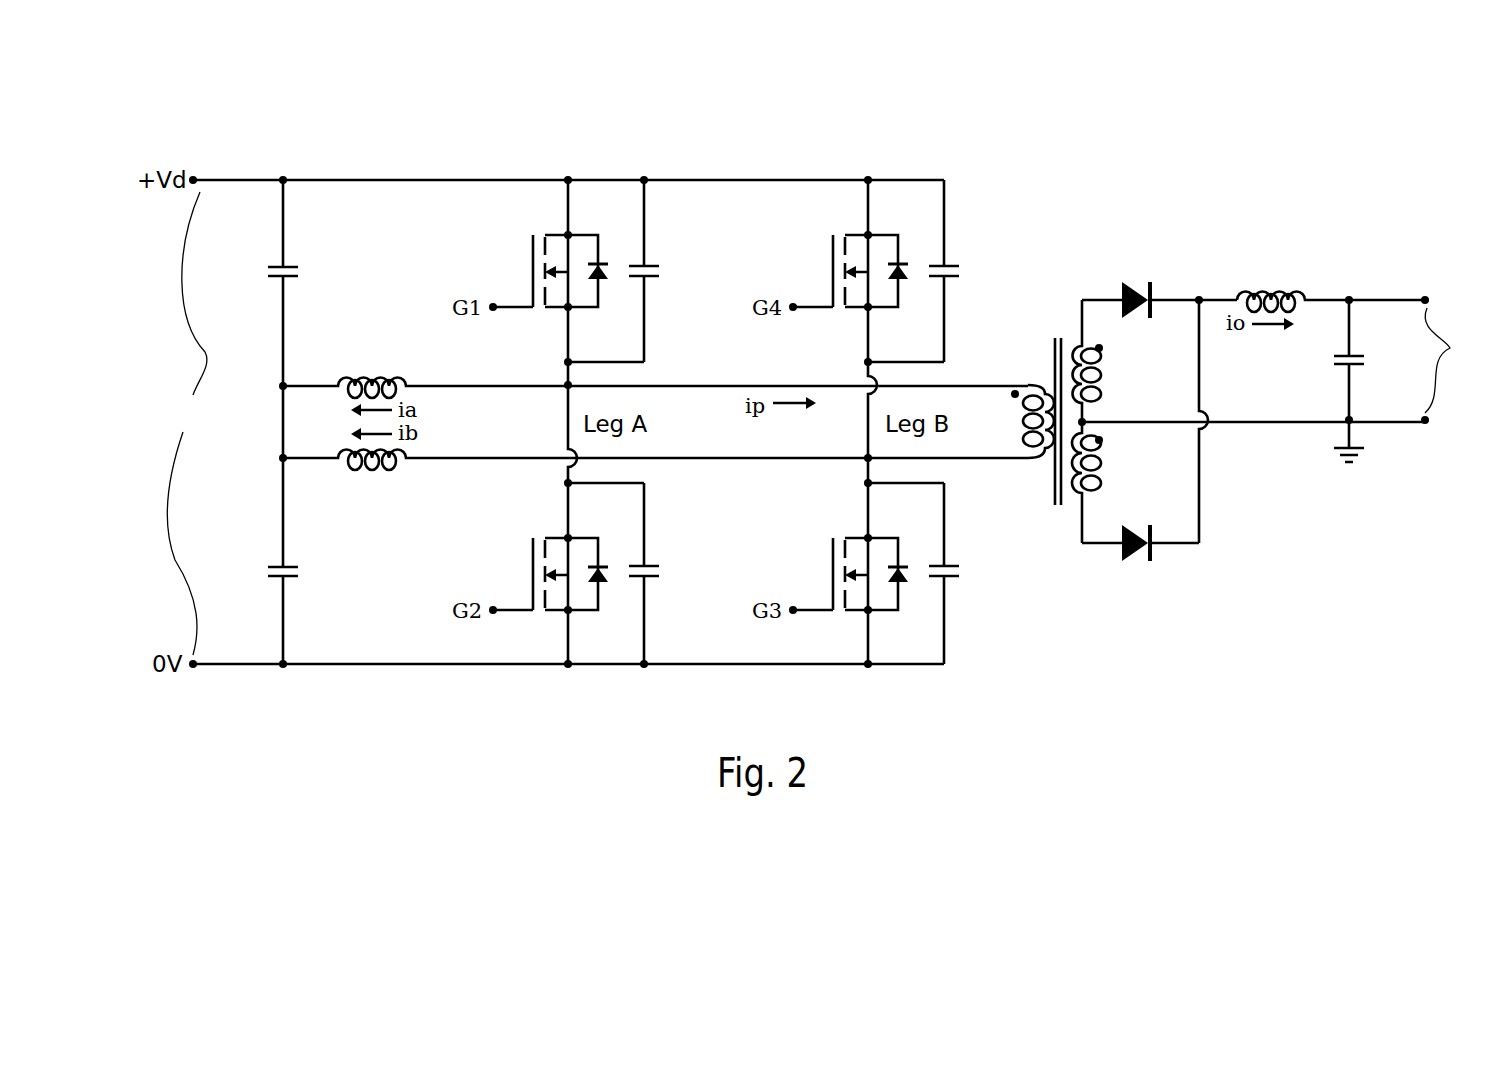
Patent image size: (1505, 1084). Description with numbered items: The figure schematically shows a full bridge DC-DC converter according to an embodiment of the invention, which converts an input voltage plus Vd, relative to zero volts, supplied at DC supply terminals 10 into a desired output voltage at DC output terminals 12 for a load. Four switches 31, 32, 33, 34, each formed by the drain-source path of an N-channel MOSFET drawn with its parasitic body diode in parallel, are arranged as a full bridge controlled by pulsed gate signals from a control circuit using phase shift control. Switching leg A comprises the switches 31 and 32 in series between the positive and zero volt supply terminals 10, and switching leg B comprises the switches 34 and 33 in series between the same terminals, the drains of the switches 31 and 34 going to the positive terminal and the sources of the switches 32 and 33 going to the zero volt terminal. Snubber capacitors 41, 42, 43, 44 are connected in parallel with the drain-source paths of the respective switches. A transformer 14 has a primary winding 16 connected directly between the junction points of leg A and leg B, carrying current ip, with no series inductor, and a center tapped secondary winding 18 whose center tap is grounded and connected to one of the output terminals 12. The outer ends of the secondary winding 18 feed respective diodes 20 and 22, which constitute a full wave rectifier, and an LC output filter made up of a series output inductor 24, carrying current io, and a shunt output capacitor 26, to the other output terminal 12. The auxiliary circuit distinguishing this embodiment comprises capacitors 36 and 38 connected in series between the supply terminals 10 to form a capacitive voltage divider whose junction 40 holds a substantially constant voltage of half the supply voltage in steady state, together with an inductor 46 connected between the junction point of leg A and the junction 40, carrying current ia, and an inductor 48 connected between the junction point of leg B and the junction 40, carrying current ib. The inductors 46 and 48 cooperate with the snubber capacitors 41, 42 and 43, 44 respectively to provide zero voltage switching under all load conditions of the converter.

The DC supply terminals 10 is at (186, 423).
The DC output terminals 12 is at (1453, 360).
The transformer 14 is at (1050, 360).
The primary winding 16 is at (1020, 426).
The center tapped secondary winding 18 is at (1096, 393).
The diode 20 is at (1133, 281).
The diode 22 is at (1135, 523).
The output inductor 24 is at (1283, 286).
The output capacitor 26 is at (1340, 368).
The switch 31 is at (523, 266).
The switch 32 is at (523, 567).
The switch 33 is at (823, 567).
The switch 34 is at (823, 266).
The capacitor 36 is at (304, 274).
The capacitor 38 is at (304, 576).
The junction 40 is at (283, 430).
The snubber capacitor 41 is at (668, 271).
The snubber capacitor 42 is at (668, 572).
The snubber capacitor 43 is at (968, 572).
The snubber capacitor 44 is at (968, 271).
The inductor 46 is at (375, 374).
The inductor 48 is at (387, 471).